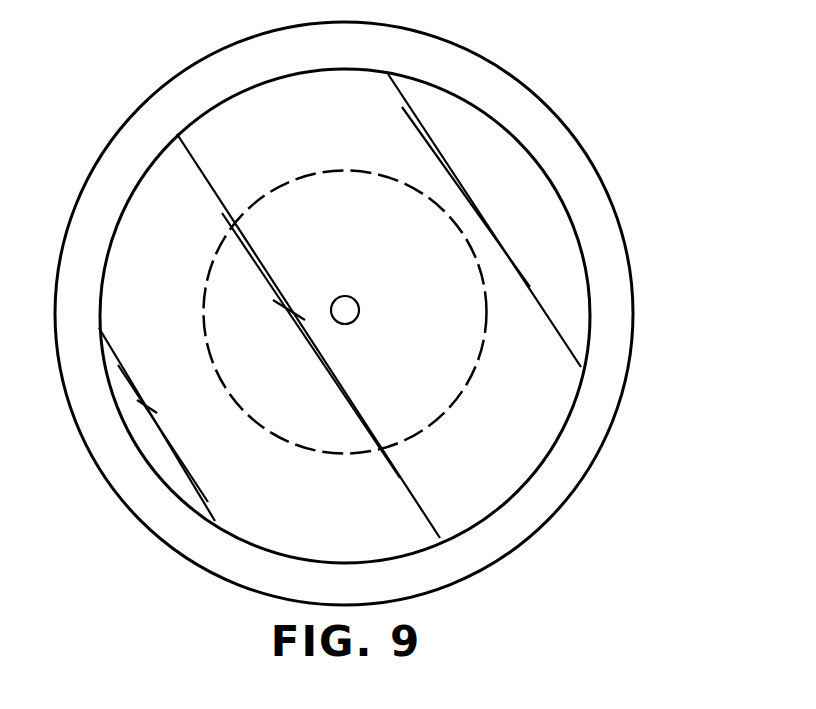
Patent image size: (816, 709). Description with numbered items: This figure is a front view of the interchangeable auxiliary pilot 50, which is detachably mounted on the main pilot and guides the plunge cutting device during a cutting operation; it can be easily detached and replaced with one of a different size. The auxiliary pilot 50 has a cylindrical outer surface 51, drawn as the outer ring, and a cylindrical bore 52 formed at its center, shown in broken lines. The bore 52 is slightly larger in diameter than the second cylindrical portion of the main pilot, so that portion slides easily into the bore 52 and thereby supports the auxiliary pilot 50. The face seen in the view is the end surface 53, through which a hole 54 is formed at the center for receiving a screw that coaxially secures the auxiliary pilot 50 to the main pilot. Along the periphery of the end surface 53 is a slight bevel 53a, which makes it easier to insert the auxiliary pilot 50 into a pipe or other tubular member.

The auxiliary pilot 50 is at (372, 313).
The cylindrical outer surface 51 is at (623, 390).
The cylindrical bore 52 is at (390, 443).
The end surface 53 is at (473, 127).
The bevel 53a is at (600, 255).
The hole 54 is at (345, 318).